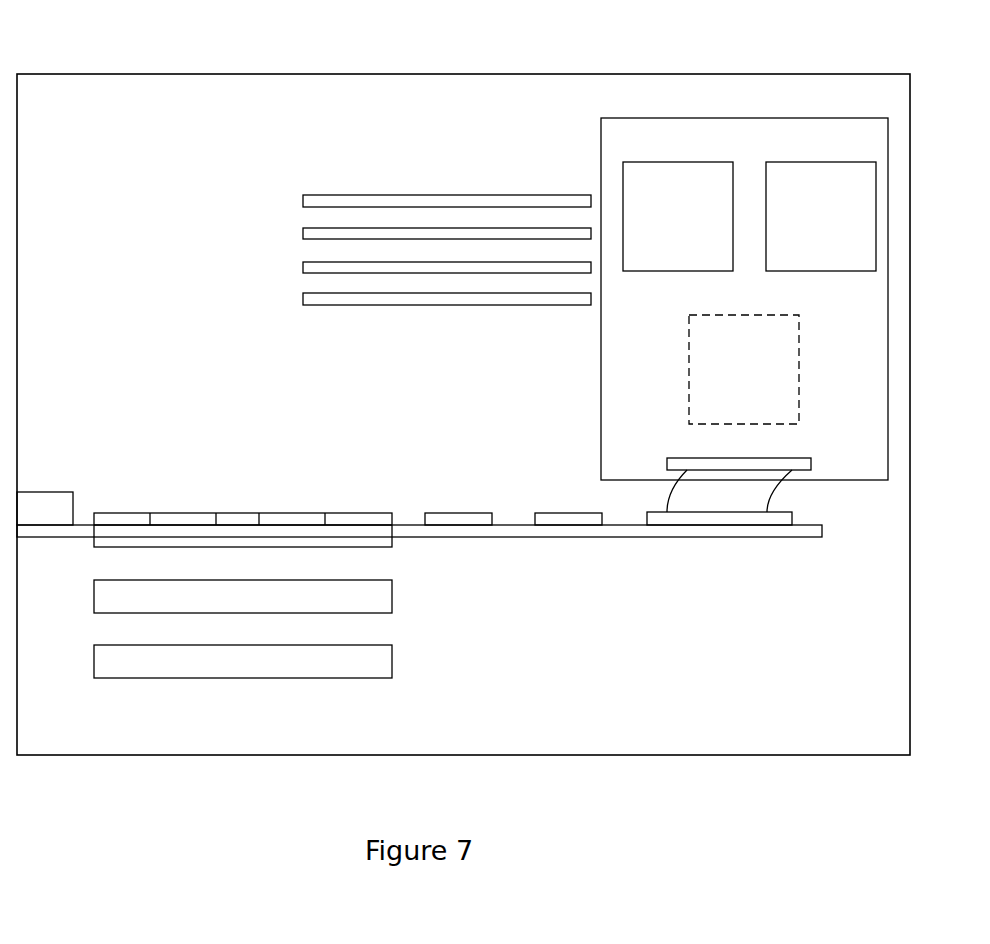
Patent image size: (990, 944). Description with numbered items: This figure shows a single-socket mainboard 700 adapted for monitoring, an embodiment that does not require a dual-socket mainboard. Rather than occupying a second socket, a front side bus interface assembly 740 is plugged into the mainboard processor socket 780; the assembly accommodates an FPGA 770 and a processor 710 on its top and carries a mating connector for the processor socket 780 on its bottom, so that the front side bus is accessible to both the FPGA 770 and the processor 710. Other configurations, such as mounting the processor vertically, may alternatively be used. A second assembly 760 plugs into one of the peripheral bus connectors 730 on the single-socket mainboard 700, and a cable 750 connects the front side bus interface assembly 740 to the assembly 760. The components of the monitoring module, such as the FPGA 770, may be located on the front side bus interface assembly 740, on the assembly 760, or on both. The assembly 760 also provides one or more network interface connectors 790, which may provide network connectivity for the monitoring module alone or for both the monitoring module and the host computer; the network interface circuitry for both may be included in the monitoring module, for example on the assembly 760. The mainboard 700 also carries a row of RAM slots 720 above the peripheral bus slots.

The single-socket mainboard 700 is at (315, 73).
The processor 710 is at (877, 192).
The RAM slots 720 is at (293, 228).
The peripheral bus connectors 730 is at (392, 668).
The front side bus interface assembly 740 is at (888, 380).
The cable 750 is at (667, 492).
The assembly 760 is at (623, 537).
The FPGA 770 is at (688, 162).
The mainboard processor socket 780 is at (800, 380).
The network interface connectors 790 is at (61, 480).